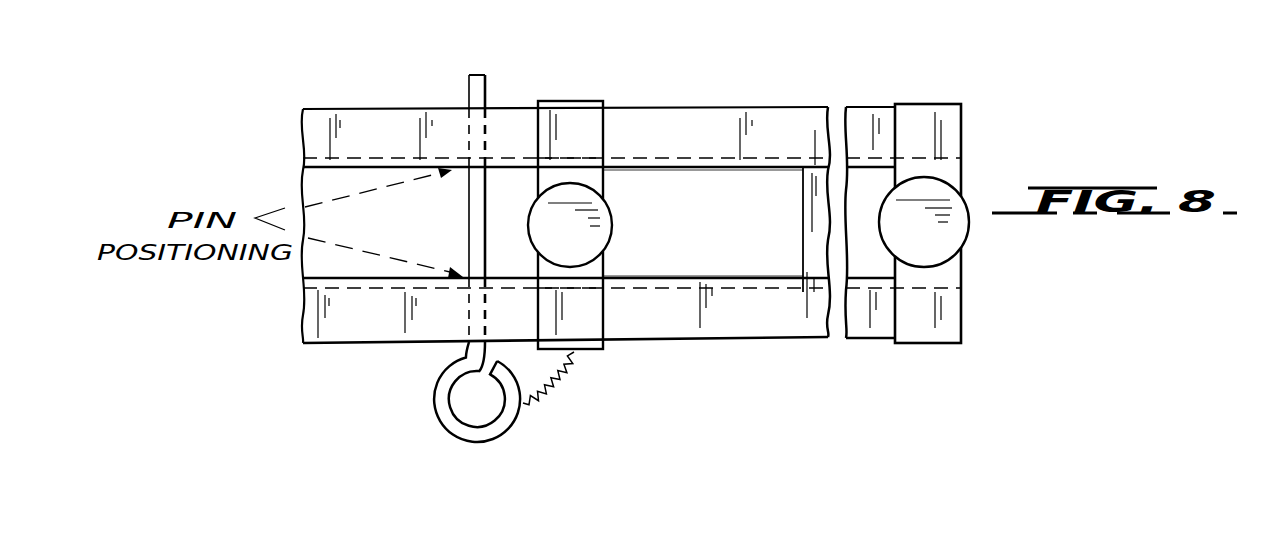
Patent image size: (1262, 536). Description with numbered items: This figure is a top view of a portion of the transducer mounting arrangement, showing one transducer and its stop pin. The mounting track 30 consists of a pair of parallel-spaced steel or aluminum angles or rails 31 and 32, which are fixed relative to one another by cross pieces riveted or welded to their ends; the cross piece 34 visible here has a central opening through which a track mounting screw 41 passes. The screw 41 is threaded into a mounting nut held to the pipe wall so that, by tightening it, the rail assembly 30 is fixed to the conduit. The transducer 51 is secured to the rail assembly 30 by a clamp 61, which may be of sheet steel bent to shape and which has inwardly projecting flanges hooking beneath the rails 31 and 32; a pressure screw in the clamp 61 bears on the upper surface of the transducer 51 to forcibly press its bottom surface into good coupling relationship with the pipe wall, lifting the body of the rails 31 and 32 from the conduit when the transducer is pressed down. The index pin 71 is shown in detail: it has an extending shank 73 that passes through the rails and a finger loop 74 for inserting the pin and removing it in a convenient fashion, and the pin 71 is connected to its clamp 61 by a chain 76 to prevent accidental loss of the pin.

The mounting track 30 is at (566, 218).
The rail 31 is at (762, 115).
The rail 32 is at (732, 340).
The cross piece 34 is at (950, 137).
The track mounting screw 41 is at (938, 216).
The transducer 51 is at (648, 187).
The clamp 61 is at (567, 102).
The index pin 71 is at (477, 180).
The shank 73 is at (467, 231).
The finger loop 74 is at (437, 415).
The chain 76 is at (550, 392).